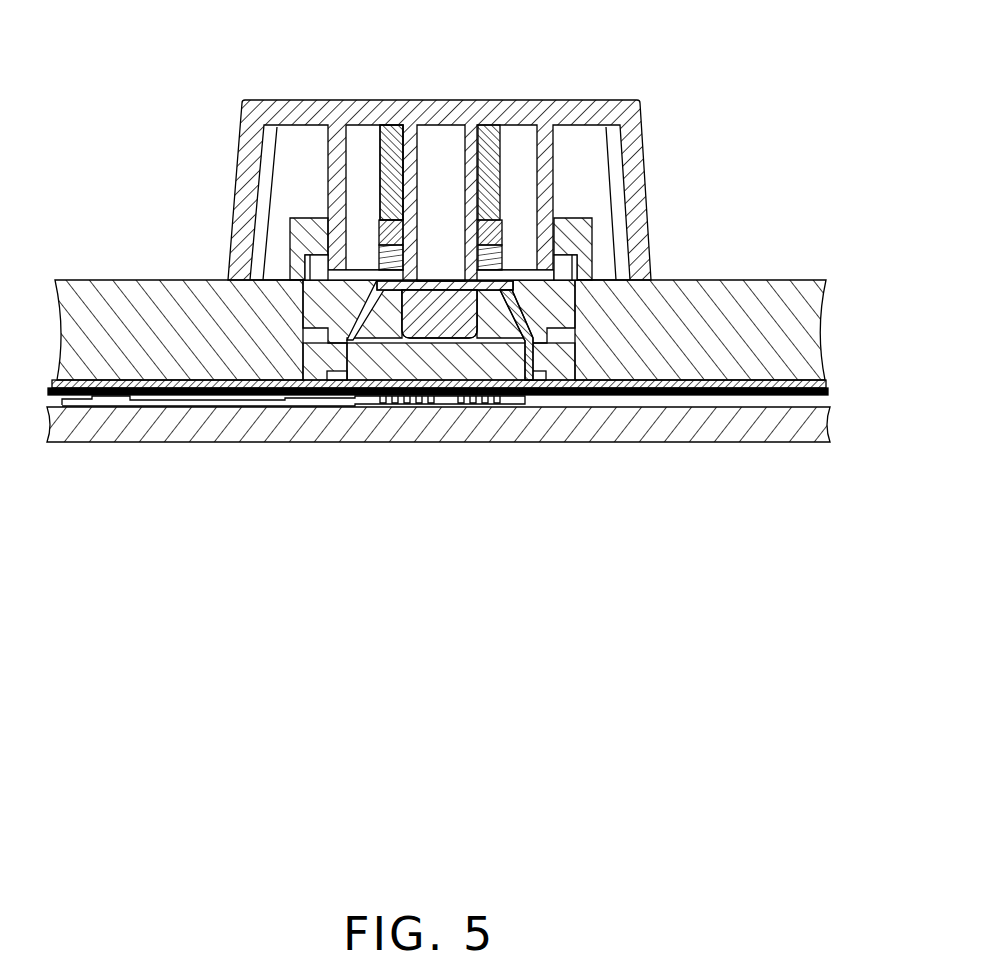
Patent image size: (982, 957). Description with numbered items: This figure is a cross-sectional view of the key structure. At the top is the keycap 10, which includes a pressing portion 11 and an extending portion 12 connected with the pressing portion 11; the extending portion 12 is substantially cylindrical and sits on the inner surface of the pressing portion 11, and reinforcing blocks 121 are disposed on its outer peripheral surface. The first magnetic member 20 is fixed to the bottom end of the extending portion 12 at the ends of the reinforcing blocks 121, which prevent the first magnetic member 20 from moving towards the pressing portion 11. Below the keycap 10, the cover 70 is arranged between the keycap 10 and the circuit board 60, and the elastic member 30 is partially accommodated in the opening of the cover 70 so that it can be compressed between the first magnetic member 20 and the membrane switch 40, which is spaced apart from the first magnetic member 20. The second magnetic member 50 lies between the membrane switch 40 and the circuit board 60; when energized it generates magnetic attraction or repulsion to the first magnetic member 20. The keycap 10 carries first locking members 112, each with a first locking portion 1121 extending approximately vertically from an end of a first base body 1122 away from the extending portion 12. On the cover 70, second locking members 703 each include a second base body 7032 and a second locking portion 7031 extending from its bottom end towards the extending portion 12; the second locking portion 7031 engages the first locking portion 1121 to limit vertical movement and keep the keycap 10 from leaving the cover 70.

The keycap 10 is at (560, 45).
The pressing portion 11 is at (443, 100).
The extending portion 12 is at (410, 183).
The reinforcing blocks 121 is at (387, 172).
The first magnetic member 20 is at (503, 227).
The elastic member 30 is at (527, 310).
The membrane switch 40 is at (826, 384).
The second magnetic member 50 is at (487, 407).
The circuit board 60 is at (662, 430).
The cover 70 is at (173, 280).
The second locking members 703 is at (341, 217).
The second locking portion 7031 is at (315, 245).
The second base body 7032 is at (302, 268).
The first locking members 112 is at (414, 391).
The first locking portion 1121 is at (325, 283).
The first base body 1122 is at (340, 230).